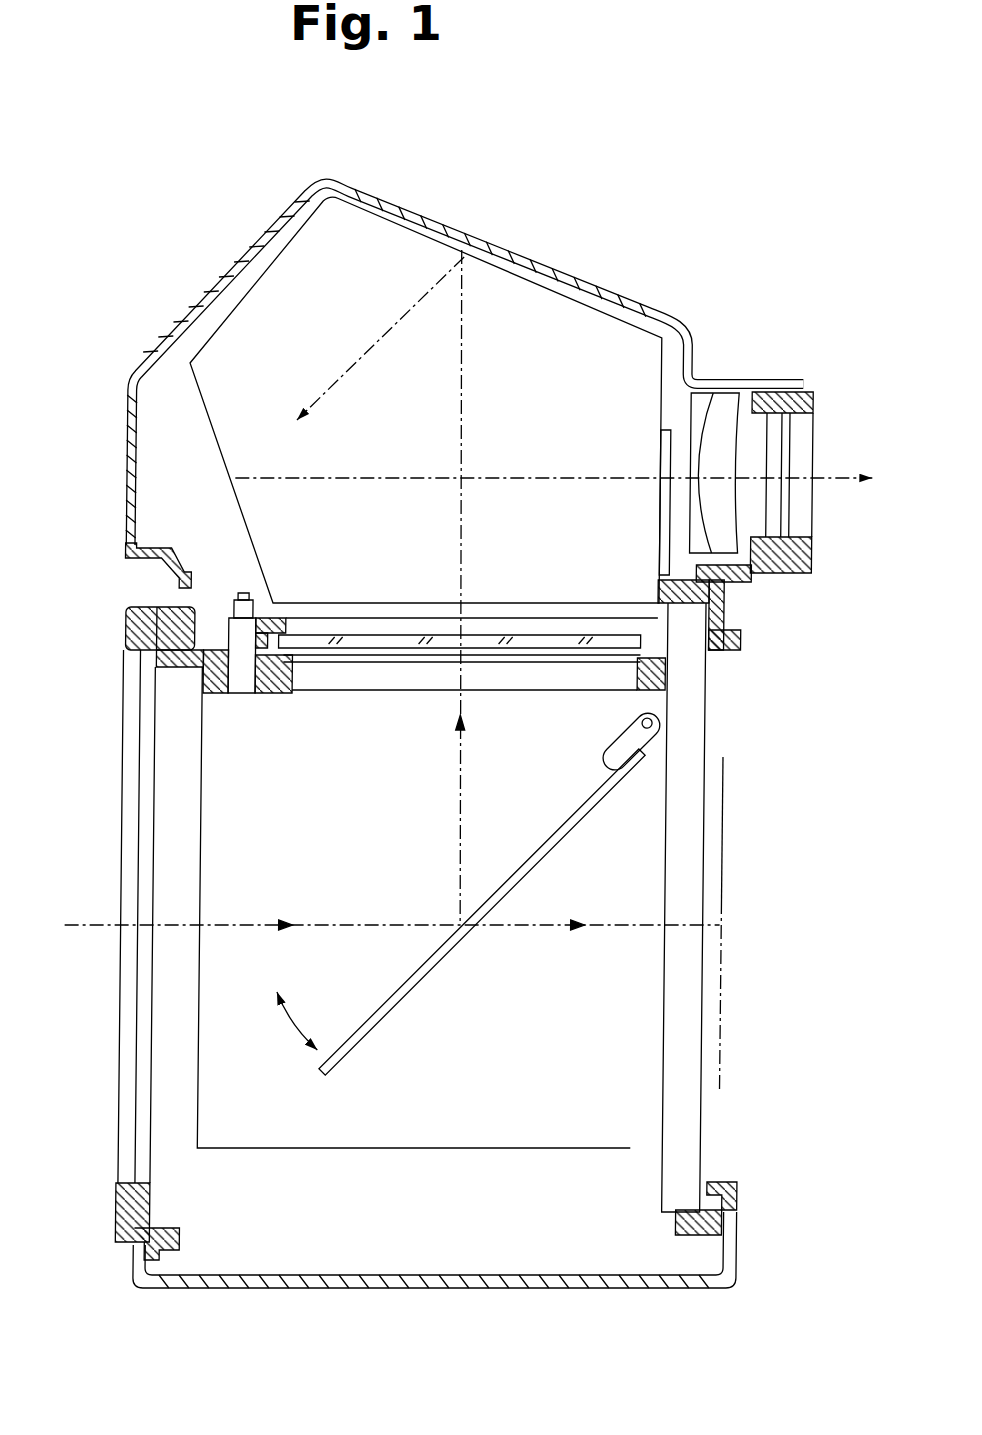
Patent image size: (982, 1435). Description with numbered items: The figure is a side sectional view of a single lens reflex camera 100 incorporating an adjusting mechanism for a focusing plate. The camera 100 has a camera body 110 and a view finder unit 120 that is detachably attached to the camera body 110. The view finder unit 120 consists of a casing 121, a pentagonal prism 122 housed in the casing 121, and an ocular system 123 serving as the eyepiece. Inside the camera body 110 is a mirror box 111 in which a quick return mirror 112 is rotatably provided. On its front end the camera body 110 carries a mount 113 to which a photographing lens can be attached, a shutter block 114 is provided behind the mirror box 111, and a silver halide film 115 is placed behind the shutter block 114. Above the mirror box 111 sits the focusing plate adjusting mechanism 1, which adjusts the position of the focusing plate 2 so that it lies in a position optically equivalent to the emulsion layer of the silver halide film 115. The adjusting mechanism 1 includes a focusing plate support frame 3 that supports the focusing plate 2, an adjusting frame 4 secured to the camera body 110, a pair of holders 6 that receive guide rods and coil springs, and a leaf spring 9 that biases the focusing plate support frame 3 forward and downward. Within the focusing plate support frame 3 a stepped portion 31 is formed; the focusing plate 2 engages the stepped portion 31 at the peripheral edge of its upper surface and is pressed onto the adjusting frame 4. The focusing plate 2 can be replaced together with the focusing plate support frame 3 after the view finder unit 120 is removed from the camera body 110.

The camera 100 is at (700, 197).
The camera body 110 is at (124, 613).
The mirror box 111 is at (445, 1135).
The quick return mirror 112 is at (427, 974).
The mount 113 is at (134, 1085).
The shutter block 114 is at (691, 1080).
The silver halide film 115 is at (723, 990).
The view finder unit 120 is at (237, 237).
The casing 121 is at (192, 302).
The pentagonal prism 122 is at (396, 273).
The ocular system 123 is at (740, 428).
The focusing plate adjusting mechanism 1 is at (372, 672).
The focusing plate 2 is at (425, 642).
The focusing plate support frame 3 is at (238, 634).
The stepped portion 31 is at (286, 640).
The adjusting frame 4 is at (272, 662).
The holder 6 is at (224, 622).
The leaf spring 9 is at (719, 637).